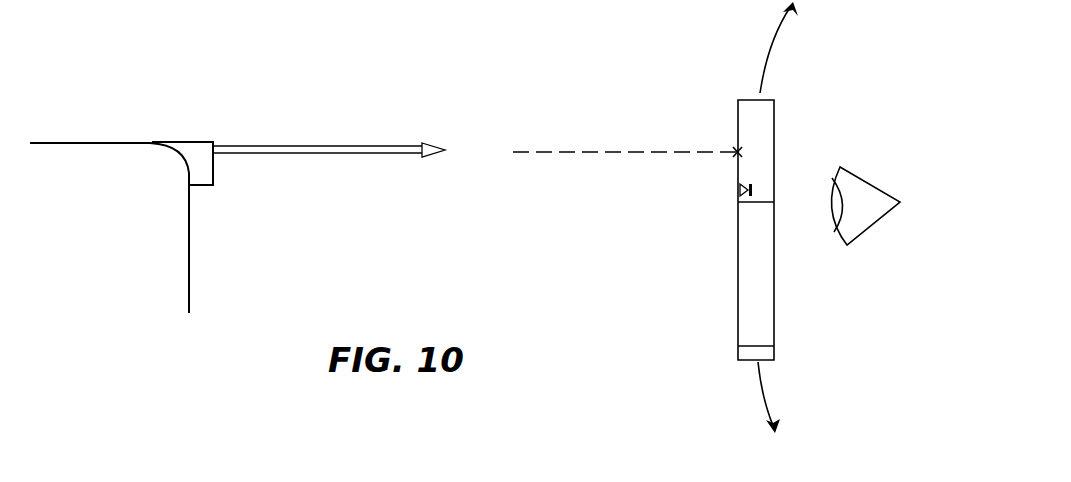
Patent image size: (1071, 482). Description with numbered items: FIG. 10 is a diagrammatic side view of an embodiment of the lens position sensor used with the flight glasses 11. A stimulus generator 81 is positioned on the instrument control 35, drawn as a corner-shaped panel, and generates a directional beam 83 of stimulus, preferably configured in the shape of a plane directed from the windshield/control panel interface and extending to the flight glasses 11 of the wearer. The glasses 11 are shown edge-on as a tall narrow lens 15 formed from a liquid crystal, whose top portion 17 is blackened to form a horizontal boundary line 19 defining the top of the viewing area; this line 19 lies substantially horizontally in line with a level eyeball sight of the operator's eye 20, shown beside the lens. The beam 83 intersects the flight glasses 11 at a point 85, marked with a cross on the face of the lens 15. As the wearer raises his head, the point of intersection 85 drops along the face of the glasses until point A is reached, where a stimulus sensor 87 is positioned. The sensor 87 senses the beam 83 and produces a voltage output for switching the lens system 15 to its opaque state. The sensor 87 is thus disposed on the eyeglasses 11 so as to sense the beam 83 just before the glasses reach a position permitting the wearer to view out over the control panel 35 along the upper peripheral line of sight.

The flight glasses 11 is at (690, 288).
The lens 15 is at (768, 272).
The top portion of lens 17 is at (768, 132).
The horizontal boundary line 19 is at (774, 202).
The operator's eye 20 is at (877, 197).
The instrument control 35 is at (102, 222).
The stimulus generator 81 is at (202, 155).
The directional beam 83 is at (280, 145).
The point of intersection 85 is at (735, 150).
The stimulus sensor 87 is at (738, 192).